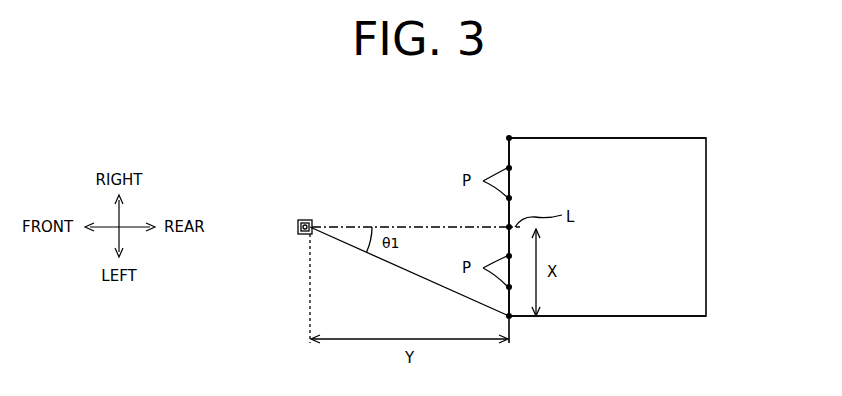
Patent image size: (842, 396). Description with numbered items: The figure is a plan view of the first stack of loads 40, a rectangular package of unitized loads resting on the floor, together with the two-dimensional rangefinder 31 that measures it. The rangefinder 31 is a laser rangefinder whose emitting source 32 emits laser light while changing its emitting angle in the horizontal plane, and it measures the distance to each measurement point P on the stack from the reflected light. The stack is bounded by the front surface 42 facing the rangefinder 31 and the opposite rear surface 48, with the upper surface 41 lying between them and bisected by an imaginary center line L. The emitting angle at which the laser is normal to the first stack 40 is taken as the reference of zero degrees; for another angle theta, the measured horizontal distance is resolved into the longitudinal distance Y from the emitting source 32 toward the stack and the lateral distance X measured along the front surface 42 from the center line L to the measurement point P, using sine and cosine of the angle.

The two-dimensional rangefinder 31 is at (299, 215).
The emitting source 32 is at (298, 227).
The first stack of loads 40 is at (706, 229).
The upper surface 41 is at (706, 166).
The front surface 42 is at (508, 150).
The rear surface 48 is at (706, 283).